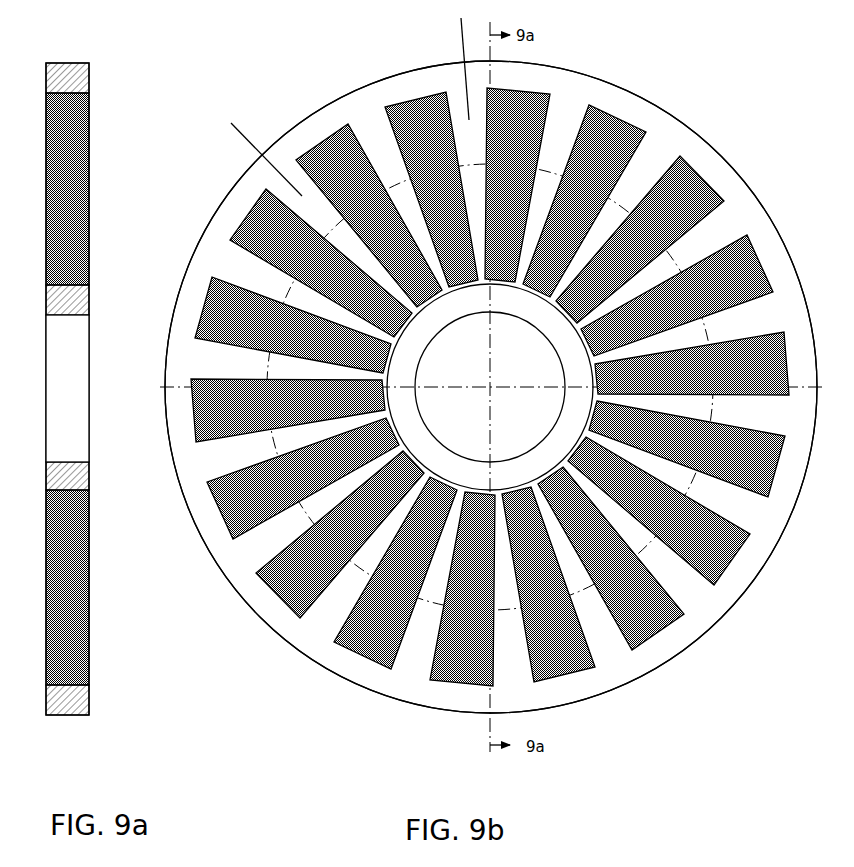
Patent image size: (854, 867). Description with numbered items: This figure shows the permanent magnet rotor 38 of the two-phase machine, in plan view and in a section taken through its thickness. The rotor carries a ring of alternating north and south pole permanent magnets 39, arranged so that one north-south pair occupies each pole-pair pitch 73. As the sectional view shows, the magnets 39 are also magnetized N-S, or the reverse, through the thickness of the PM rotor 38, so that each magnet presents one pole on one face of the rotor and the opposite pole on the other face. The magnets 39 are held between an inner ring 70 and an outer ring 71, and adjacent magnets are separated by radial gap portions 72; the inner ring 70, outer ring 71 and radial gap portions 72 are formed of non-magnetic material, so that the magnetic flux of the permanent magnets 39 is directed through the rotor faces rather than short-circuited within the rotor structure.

In FIG. 9b, the permanent magnet rotor 38 is at (577, 58).
In FIG. 9a, the permanent magnets 39 is at (89, 196).
In FIG. 9b, the permanent magnets 39 is at (593, 128).
In FIG. 9a, the inner ring 70 is at (89, 305).
In FIG. 9b, the inner ring 70 is at (423, 433).
In FIG. 9a, the outer ring 71 is at (89, 80).
In FIG. 9b, the outer ring 71 is at (677, 661).
In FIG. 9b, the radial gap portions 72 is at (512, 668).
In FIG. 9b, the pole-pair pitch 73 is at (462, 35).